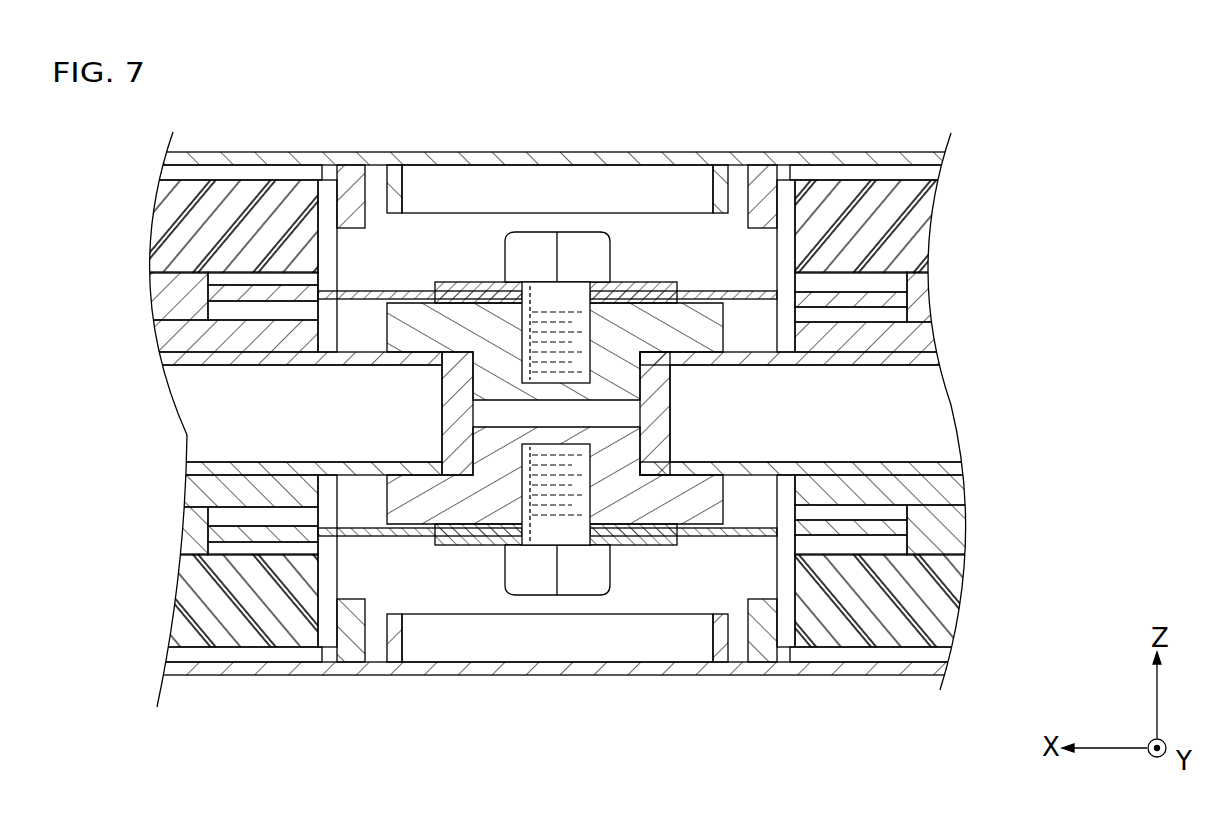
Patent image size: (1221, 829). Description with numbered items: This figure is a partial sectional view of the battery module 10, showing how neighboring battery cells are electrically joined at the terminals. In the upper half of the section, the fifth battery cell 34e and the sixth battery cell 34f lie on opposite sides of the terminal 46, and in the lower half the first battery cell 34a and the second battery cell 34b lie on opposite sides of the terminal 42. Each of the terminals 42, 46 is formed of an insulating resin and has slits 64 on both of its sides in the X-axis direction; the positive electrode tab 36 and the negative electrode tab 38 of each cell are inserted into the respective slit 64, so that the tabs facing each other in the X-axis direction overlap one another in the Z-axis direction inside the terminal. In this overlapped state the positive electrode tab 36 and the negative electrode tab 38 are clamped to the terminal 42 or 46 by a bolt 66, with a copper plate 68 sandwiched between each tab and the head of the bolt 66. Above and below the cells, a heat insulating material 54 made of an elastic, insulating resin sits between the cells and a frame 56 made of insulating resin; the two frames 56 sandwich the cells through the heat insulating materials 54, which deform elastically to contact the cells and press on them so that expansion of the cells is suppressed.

The battery module 10 is at (452, 90).
The first battery cell 34a is at (948, 527).
The second battery cell 34b is at (205, 542).
The fifth battery cell 34e is at (916, 299).
The sixth battery cell 34f is at (160, 299).
The positive electrode tab 36 is at (400, 291).
The negative electrode tab 38 is at (724, 291).
The terminal 42 is at (485, 510).
The terminal 46 is at (485, 320).
The heat insulating material 54 is at (244, 190).
The frame 56 is at (572, 158).
The slit 64 is at (348, 229).
The bolt 66 is at (580, 250).
The copper plate 68 is at (642, 286).